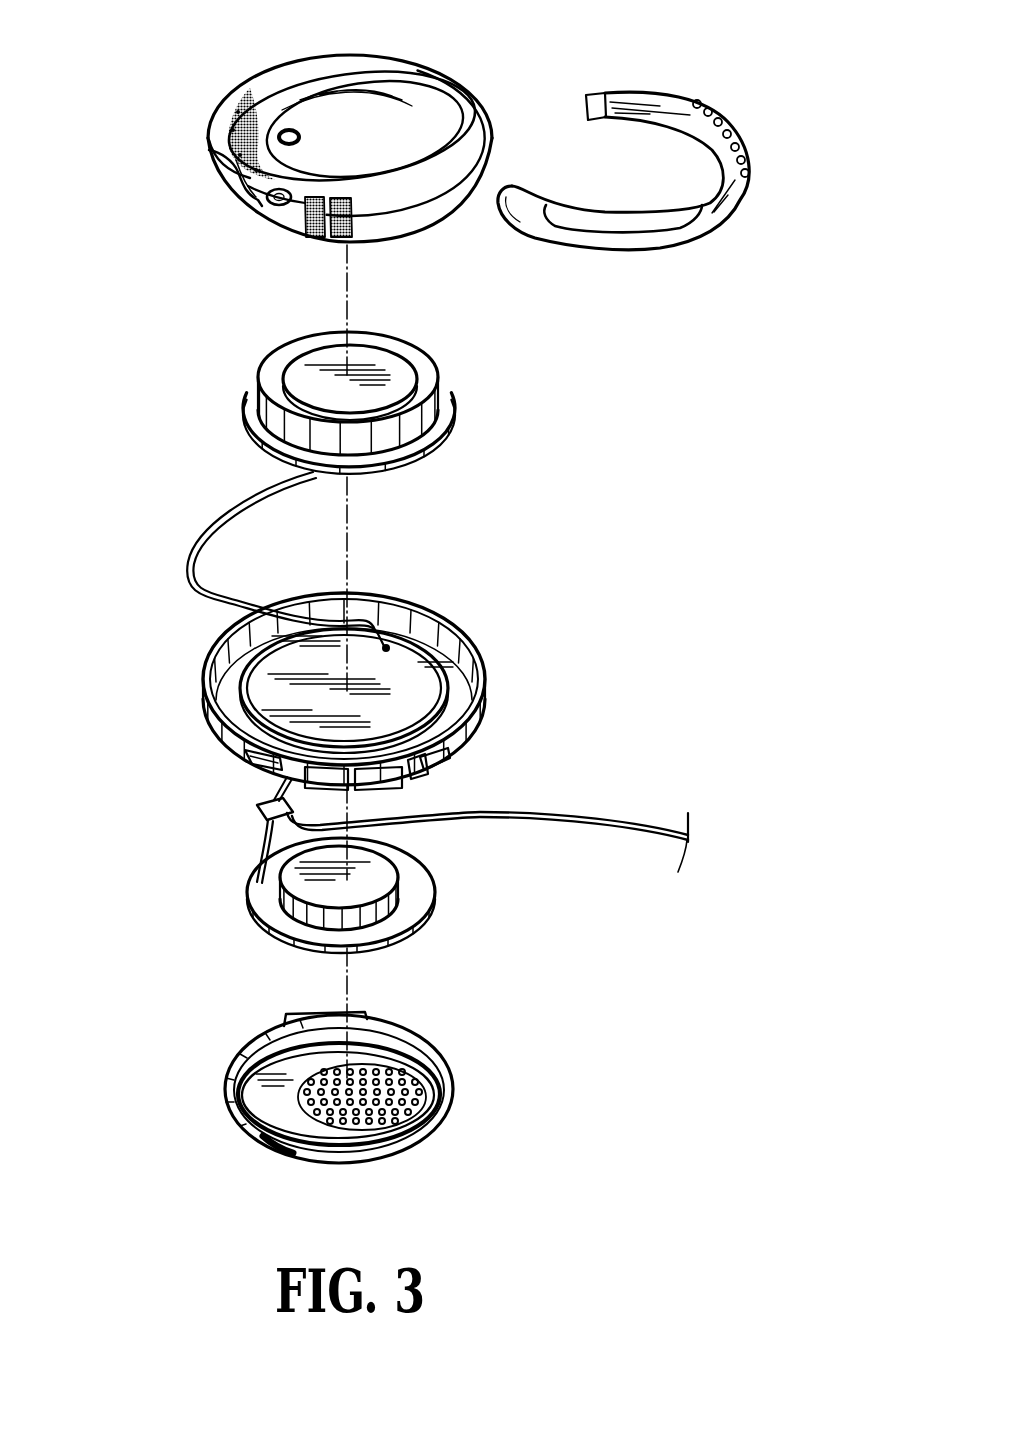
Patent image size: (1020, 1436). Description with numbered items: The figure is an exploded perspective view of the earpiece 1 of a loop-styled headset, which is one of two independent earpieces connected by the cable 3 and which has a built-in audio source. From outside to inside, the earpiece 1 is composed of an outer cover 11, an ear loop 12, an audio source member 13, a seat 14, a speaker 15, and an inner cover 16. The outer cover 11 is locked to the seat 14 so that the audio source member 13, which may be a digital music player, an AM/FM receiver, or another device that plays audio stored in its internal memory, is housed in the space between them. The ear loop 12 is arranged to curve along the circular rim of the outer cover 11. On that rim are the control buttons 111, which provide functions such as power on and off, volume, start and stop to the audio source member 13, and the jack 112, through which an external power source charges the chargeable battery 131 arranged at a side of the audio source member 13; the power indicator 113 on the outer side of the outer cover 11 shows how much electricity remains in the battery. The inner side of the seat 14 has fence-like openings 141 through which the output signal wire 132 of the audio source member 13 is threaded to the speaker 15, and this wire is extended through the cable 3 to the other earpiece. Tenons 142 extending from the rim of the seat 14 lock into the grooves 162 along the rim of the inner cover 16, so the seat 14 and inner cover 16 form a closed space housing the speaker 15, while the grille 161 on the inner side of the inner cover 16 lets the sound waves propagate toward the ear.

The earpiece 1 is at (553, 580).
The cable 3 is at (636, 806).
The outer cover 11 is at (415, 97).
The control buttons 111 is at (333, 238).
The jack 112 is at (268, 206).
The power indicator 113 is at (284, 130).
The ear loop 12 is at (728, 200).
The audio source member 13 is at (432, 378).
The chargeable battery 131 is at (370, 352).
The output signal wire 132 is at (207, 518).
The seat 14 is at (483, 672).
The fence-like openings 141 is at (422, 769).
The engaging tabs 142 is at (465, 752).
The speaker 15 is at (417, 900).
The inner cover 16 is at (433, 1063).
The grille 161 is at (377, 1068).
The grooves 162 is at (266, 1148).